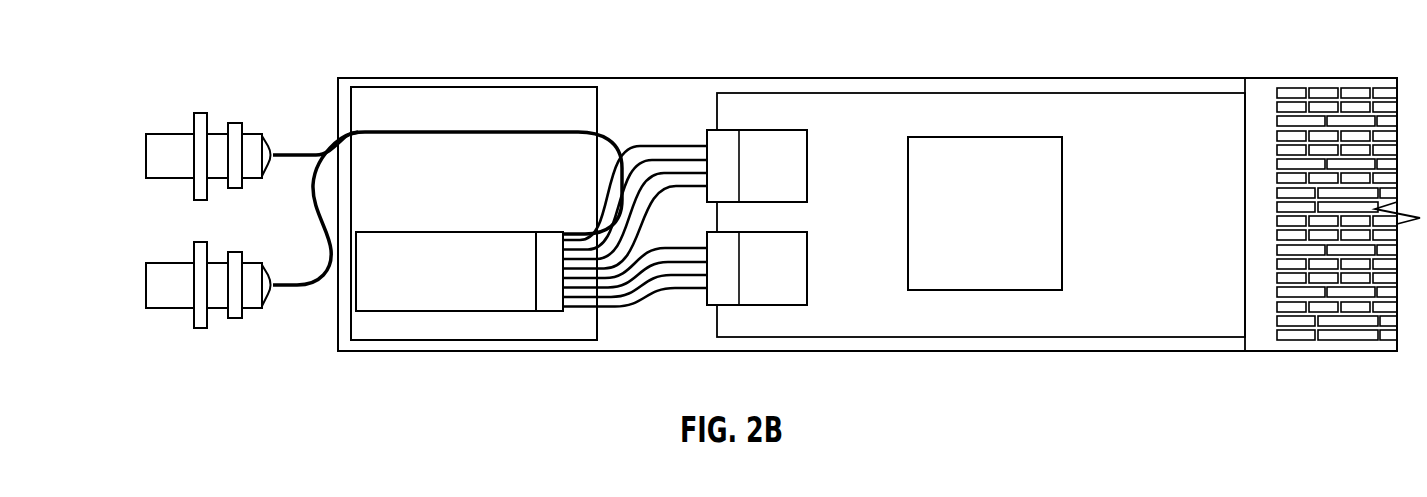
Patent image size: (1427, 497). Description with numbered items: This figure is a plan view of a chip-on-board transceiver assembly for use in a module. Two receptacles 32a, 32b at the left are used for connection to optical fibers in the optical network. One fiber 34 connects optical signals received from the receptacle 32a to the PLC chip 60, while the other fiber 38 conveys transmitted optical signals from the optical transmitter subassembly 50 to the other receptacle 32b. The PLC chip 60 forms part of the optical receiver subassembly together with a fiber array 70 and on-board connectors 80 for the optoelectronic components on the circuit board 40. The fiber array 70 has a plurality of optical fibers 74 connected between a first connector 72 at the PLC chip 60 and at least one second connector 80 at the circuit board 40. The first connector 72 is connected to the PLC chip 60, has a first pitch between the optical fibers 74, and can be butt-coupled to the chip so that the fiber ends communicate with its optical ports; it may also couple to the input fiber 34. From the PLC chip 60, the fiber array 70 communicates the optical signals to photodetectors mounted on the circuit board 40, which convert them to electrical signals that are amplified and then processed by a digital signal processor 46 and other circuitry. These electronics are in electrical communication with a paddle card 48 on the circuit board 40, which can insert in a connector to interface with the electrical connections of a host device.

The receptacle 32a is at (173, 308).
The receptacle 32b is at (177, 134).
The fiber 34 is at (308, 287).
The fiber 38 is at (283, 152).
The circuit board 40 is at (1098, 78).
The digital signal processor 46 is at (1015, 137).
The paddle card 48 is at (1327, 88).
The optical transmitter subassembly 50 is at (487, 86).
The PLC chip 60 is at (468, 312).
The fiber array 70 is at (754, 167).
The first connector 72 is at (553, 312).
The optical fibers 74 is at (688, 292).
The second connector 80 is at (807, 192).